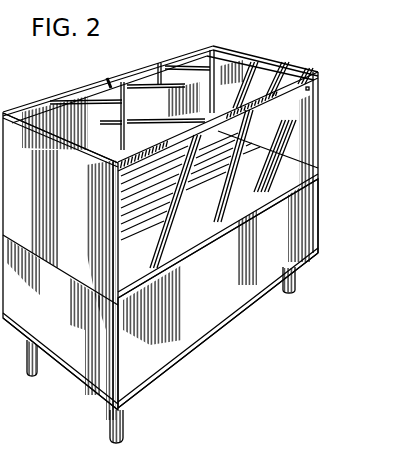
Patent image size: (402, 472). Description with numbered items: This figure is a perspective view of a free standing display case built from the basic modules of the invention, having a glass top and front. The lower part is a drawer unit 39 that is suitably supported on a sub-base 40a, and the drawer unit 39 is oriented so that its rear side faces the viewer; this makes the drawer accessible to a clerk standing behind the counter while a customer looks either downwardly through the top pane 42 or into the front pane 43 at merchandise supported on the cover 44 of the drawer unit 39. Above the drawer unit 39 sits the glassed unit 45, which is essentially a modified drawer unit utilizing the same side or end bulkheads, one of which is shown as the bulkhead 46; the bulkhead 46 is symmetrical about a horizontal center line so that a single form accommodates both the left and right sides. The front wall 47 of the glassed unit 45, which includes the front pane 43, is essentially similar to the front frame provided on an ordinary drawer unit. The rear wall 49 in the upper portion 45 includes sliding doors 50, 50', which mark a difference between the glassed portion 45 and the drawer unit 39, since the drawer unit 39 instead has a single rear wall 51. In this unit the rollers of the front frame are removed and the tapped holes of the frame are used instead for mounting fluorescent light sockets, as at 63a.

The drawer unit 39 is at (228, 310).
The sub-base 40a is at (131, 423).
The top pane 42 is at (252, 62).
The front pane 43 is at (304, 117).
The cover 44 is at (244, 208).
The glassed unit 45 is at (21, 128).
The bulkhead 46 is at (73, 206).
The front wall 47 is at (303, 70).
The rear wall 49 is at (110, 77).
The sliding door 50 is at (87, 116).
The sliding door 50' is at (185, 86).
The rear wall 51 is at (232, 283).
The fluorescent light socket 63a is at (334, 64).